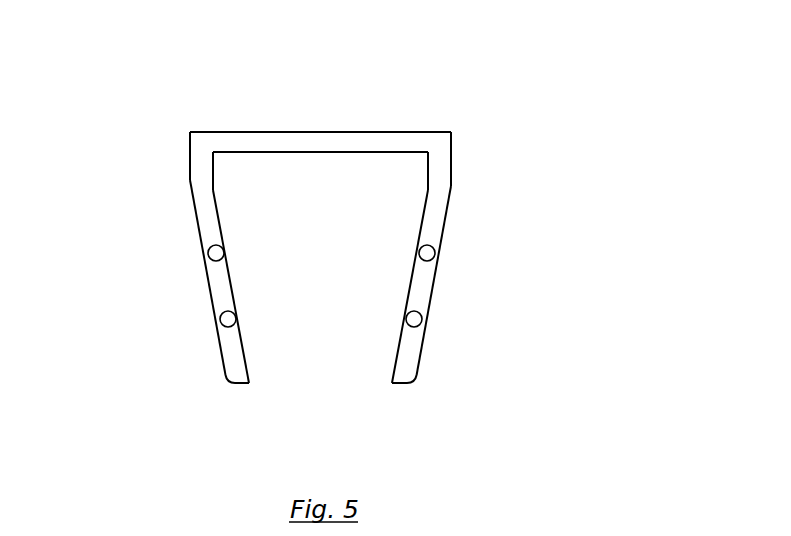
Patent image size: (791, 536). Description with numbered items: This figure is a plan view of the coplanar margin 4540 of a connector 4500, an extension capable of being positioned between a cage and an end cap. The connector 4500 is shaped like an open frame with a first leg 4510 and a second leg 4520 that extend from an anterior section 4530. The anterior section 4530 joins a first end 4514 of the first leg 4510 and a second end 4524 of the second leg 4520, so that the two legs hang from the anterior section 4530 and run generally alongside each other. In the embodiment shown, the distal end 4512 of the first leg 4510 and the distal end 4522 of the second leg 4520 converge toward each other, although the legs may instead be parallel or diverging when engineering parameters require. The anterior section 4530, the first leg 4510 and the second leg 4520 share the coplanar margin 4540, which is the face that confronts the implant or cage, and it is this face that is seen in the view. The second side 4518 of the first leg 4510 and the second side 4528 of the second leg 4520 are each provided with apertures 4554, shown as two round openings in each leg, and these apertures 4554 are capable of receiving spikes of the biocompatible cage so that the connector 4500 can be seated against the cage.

The connector 4500 is at (371, 253).
The first leg 4510 is at (150, 312).
The distal end of first leg 4512 is at (175, 409).
The first end of first leg 4514 is at (131, 159).
The second side of first leg 4518 is at (150, 286).
The second leg 4520 is at (479, 325).
The distal end of second leg 4522 is at (464, 419).
The second end of second leg 4524 is at (524, 143).
The second side of second leg 4528 is at (471, 286).
The anterior section 4530 is at (339, 87).
The coplanar margin 4540 is at (315, 97).
The apertures 4554 is at (309, 266).